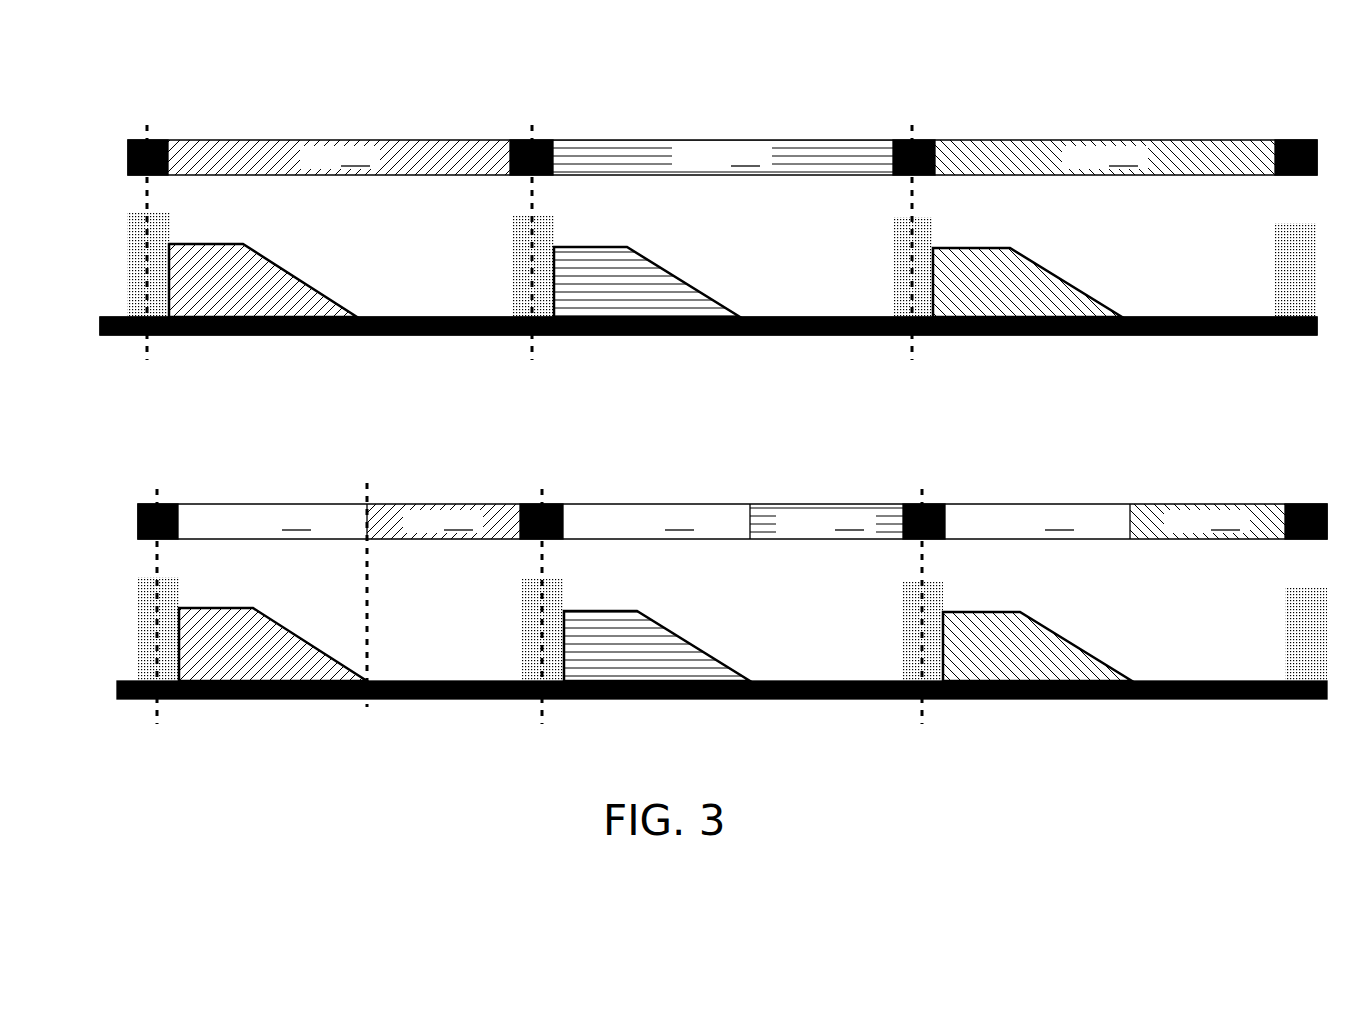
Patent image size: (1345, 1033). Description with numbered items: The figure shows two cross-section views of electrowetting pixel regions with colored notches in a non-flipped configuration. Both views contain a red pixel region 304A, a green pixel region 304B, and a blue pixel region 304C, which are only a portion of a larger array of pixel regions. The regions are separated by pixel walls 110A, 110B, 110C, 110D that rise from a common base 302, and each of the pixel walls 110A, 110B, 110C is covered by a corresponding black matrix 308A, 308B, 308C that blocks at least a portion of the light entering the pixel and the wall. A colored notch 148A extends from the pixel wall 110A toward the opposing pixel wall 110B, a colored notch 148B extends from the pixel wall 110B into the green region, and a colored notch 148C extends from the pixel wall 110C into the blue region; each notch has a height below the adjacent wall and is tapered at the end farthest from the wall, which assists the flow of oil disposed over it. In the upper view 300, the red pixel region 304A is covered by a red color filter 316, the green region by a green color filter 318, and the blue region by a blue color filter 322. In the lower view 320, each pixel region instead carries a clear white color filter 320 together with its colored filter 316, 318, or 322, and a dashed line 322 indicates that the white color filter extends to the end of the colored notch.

The cross-section view of pixel regions with colored color filters 300 is at (176, 80).
The white color filter 320 is at (185, 468).
The timeline base 302 is at (330, 334).
The red pixel region 304A is at (426, 268).
The green pixel region 304B is at (828, 269).
The blue pixel region 304C is at (1211, 274).
The black matrix 308A is at (165, 140).
The black matrix 308B is at (536, 140).
The black matrix 308C is at (915, 141).
The pixel wall 110A is at (130, 298).
The pixel wall 110B is at (512, 298).
The pixel wall 110C is at (893, 298).
The pixel wall 110D is at (1275, 298).
The colored notch 148A is at (244, 303).
The colored notch 148B is at (626, 303).
The colored notch 148C is at (1008, 303).
The red color filter 316 is at (344, 339).
The green color filter 318 is at (728, 339).
The blue color filter 322 is at (367, 483).